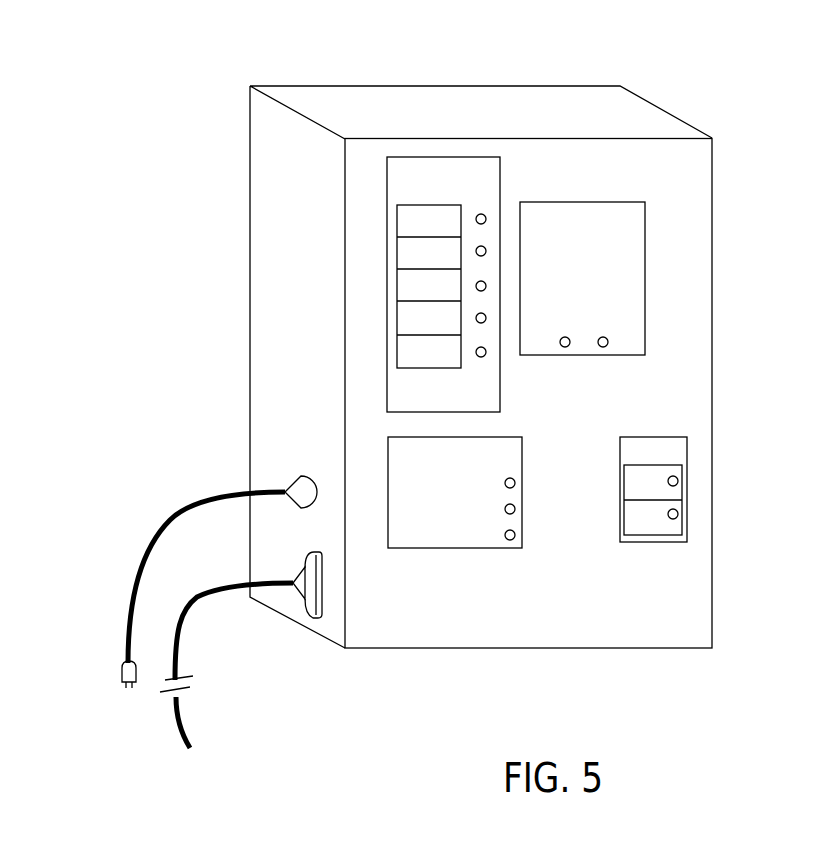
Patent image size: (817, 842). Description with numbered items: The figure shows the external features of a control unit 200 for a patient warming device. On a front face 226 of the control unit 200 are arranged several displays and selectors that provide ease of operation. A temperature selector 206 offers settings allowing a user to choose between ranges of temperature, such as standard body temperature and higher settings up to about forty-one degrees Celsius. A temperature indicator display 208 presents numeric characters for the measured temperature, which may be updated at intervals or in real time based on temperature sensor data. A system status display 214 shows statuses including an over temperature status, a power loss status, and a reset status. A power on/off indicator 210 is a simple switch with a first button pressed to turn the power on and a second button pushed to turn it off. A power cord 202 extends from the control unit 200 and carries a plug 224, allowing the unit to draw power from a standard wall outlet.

The control unit 200 is at (702, 84).
The power cord 202 is at (177, 510).
The temperature selector 206 is at (502, 185).
The temperature indicator display 208 is at (645, 213).
The power on/off indicator 210 is at (688, 458).
The system status display 214 is at (460, 549).
The plug 224 is at (120, 672).
The front face 226 is at (712, 375).